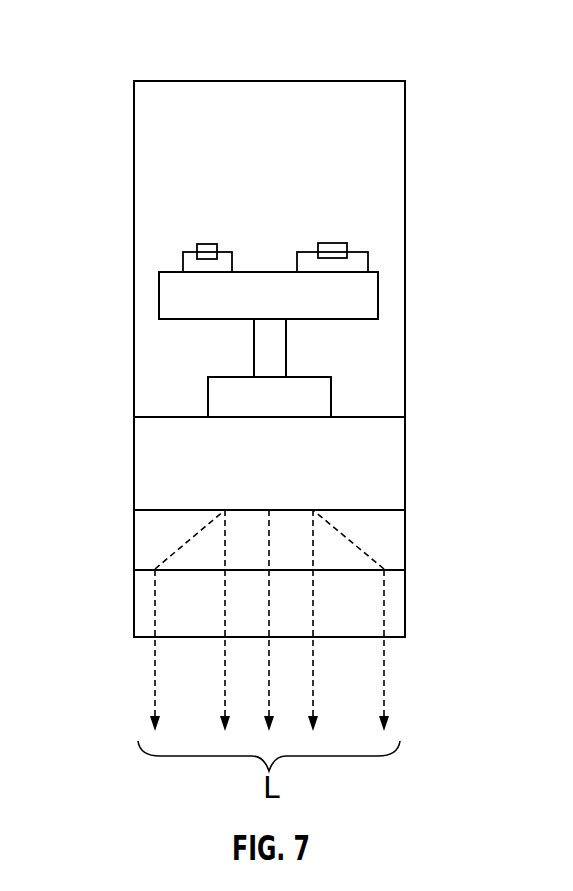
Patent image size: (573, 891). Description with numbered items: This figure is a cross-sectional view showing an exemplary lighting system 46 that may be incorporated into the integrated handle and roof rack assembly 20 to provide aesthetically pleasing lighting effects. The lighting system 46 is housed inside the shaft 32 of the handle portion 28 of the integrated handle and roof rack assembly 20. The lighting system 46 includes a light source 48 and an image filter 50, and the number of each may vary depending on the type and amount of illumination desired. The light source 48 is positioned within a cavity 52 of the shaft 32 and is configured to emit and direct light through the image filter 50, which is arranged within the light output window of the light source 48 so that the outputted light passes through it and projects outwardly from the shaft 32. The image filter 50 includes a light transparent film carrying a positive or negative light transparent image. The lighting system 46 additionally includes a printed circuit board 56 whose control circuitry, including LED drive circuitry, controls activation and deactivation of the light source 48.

The integrated handle and roof rack assembly 20 is at (124, 40).
The handle portion 28 is at (129, 181).
The shaft 32 is at (178, 81).
The lighting system 46 is at (330, 219).
The light source 48 is at (368, 473).
The image filter 50 is at (390, 605).
The cavity 52 is at (368, 398).
The printed circuit board 56 is at (372, 297).